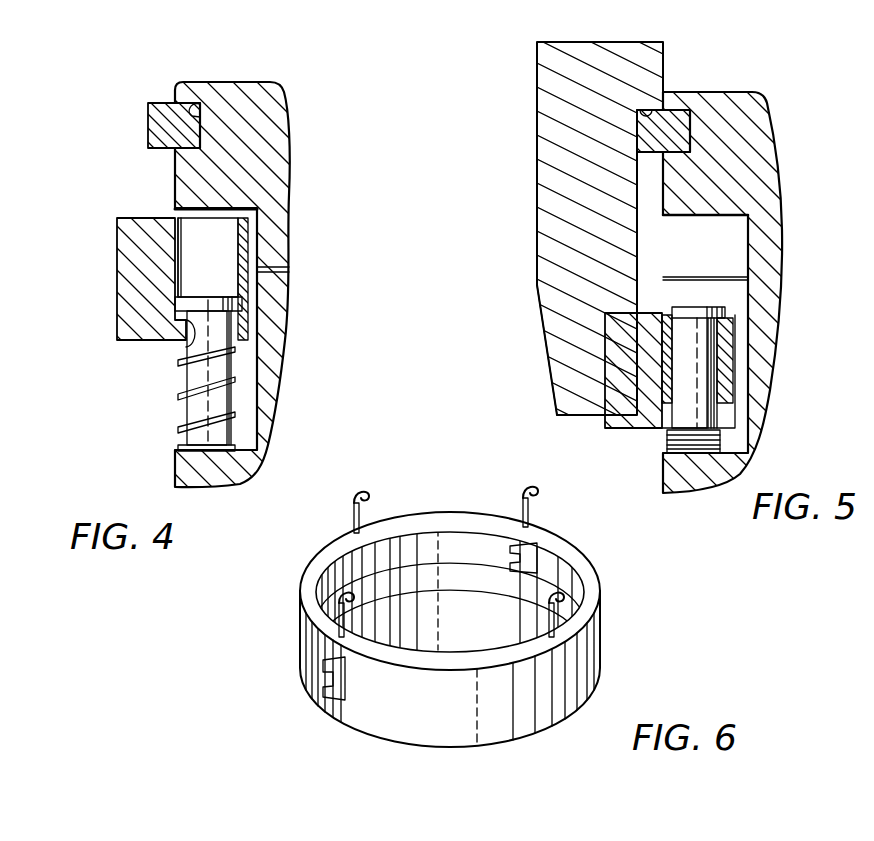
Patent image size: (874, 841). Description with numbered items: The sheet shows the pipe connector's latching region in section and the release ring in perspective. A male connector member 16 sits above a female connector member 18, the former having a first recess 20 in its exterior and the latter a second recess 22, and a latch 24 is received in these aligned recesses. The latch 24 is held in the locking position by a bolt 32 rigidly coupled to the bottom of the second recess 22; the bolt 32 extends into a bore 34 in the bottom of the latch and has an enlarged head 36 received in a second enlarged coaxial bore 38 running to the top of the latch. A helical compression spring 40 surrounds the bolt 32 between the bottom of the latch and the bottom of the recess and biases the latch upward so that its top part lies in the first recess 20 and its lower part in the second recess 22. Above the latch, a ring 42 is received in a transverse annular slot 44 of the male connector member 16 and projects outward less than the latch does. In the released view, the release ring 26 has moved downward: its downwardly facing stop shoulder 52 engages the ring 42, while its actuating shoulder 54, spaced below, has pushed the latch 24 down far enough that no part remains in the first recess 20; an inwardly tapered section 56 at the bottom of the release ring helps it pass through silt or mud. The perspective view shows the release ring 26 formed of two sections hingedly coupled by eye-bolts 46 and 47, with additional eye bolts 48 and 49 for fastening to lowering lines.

In FIG. 4, the male connector member 16 is at (287, 95).
In FIG. 5, the male connector member 16 is at (800, 154).
In FIG. 4, the female connector member 18 is at (294, 311).
In FIG. 5, the female connector member 18 is at (777, 329).
In FIG. 4, the first recess 20 is at (246, 237).
In FIG. 5, the first recess 20 is at (738, 236).
In FIG. 4, the second recess 22 is at (250, 400).
In FIG. 5, the second recess 22 is at (733, 296).
In FIG. 4, the latch 24 is at (114, 258).
In FIG. 5, the latch 24 is at (600, 428).
In FIG. 5, the release ring 26 is at (530, 93).
In FIG. 6, the release ring 26 is at (572, 539).
In FIG. 4, the bolt 32 is at (180, 378).
In FIG. 4, the bore 34 is at (185, 347).
In FIG. 4, the enlarged head 36 is at (205, 297).
In FIG. 4, the second enlarged coaxial bore 38 is at (190, 218).
In FIG. 4, the helical compression spring 40 is at (183, 428).
In FIG. 5, the helical compression spring 40 is at (718, 375).
In FIG. 4, the ring 42 is at (148, 118).
In FIG. 5, the ring 42 is at (705, 112).
In FIG. 4, the transverse annular slot 44 is at (195, 106).
In FIG. 6, the eye-bolt 46 is at (548, 485).
In FIG. 6, the eye-bolt 47 is at (340, 597).
In FIG. 6, the eye bolt 48 is at (367, 493).
In FIG. 6, the eye bolt 49 is at (556, 597).
In FIG. 5, the stop shoulder 52 is at (647, 114).
In FIG. 5, the actuating shoulder 54 is at (664, 321).
In FIG. 5, the tapered section 56 is at (545, 337).